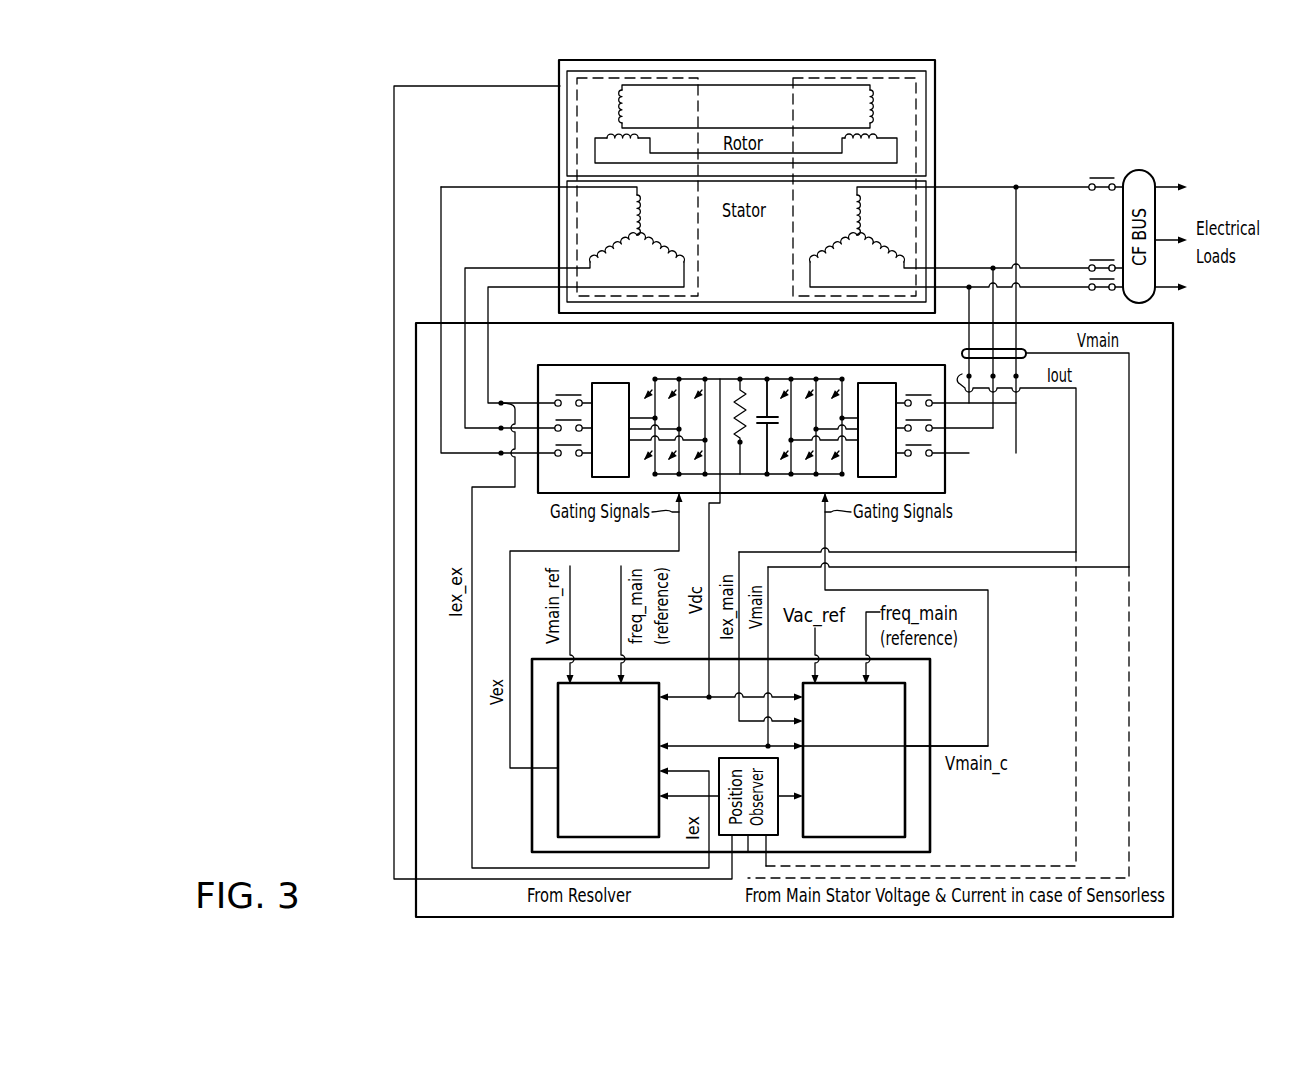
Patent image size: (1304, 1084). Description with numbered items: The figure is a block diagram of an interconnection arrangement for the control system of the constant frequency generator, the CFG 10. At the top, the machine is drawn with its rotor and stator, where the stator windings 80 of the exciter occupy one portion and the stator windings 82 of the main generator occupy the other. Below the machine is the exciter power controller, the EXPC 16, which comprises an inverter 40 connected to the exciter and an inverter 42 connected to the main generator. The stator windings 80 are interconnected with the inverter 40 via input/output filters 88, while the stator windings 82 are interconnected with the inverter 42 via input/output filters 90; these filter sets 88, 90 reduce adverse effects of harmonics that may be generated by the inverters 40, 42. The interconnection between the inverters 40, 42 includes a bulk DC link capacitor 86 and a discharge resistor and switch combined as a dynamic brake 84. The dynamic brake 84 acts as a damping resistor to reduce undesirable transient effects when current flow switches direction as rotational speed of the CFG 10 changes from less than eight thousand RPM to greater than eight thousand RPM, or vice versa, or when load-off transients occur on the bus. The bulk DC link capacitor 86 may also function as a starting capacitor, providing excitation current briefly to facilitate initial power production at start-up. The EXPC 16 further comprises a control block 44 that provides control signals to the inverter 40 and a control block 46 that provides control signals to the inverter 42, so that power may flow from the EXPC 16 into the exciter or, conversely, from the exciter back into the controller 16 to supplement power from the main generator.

The CFG 10 is at (286, 268).
The EXPC 16 is at (416, 745).
The inverter 40 is at (532, 428).
The inverter 42 is at (758, 413).
The control block 44 is at (558, 808).
The control block 46 is at (905, 808).
The stator windings 80 is at (578, 155).
The stator windings 82 is at (916, 155).
The dynamic brake 84 is at (740, 381).
The bulk DC link capacitor 86 is at (770, 413).
The input/output filters 88 is at (610, 383).
The input/output filters 90 is at (877, 383).